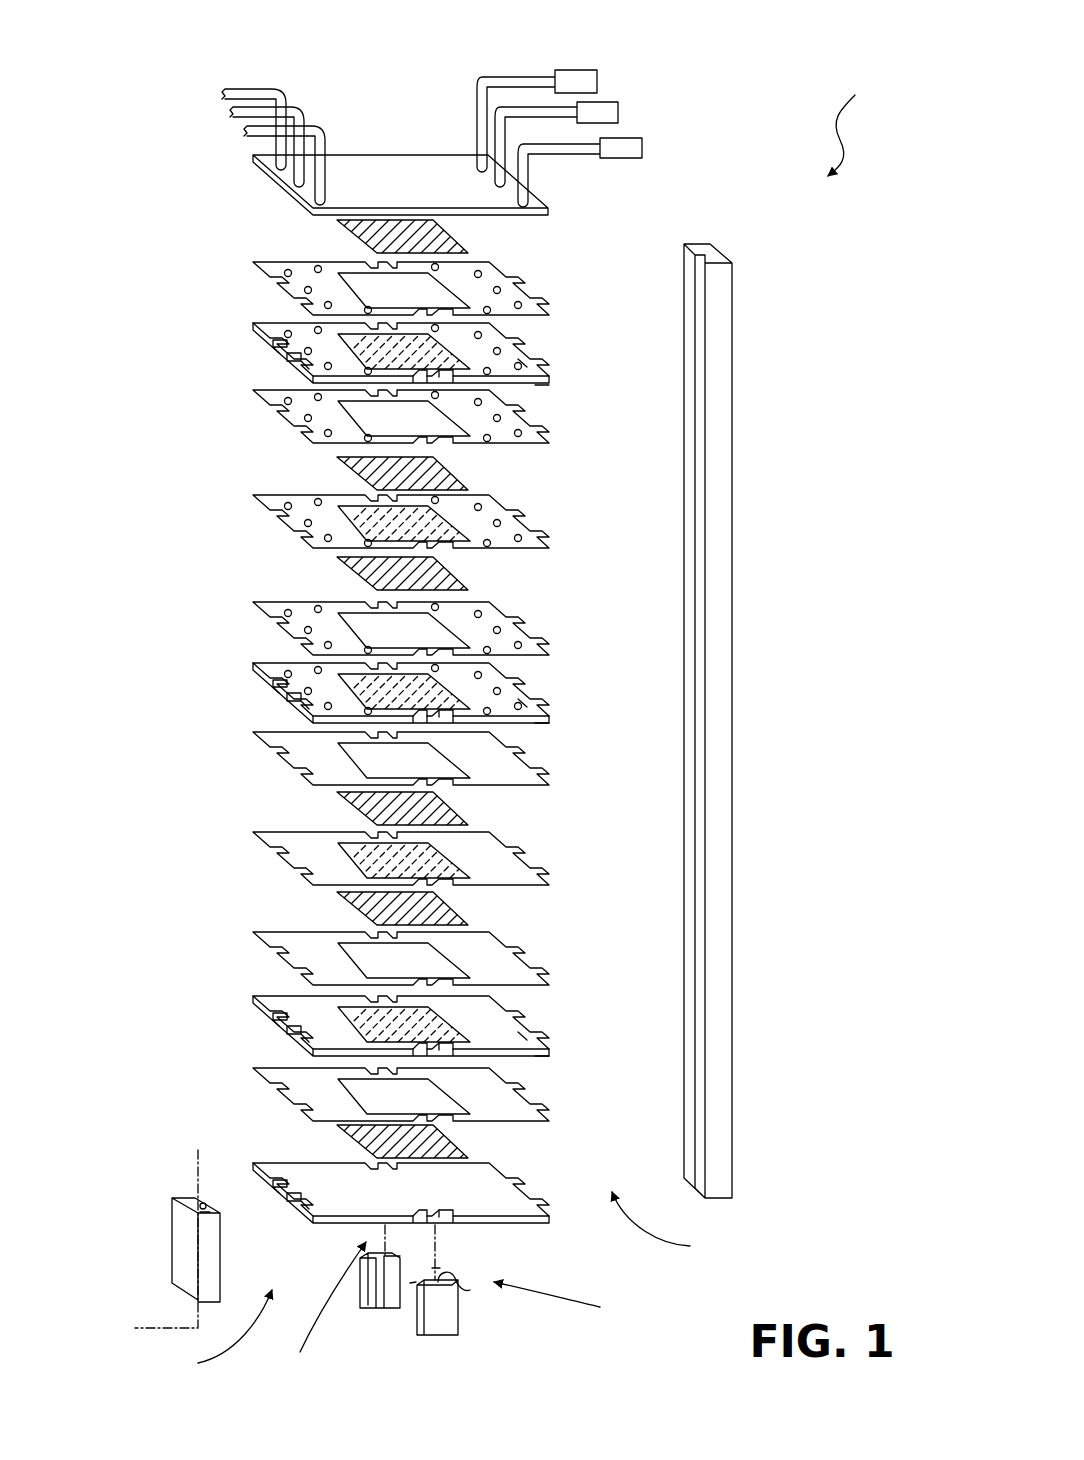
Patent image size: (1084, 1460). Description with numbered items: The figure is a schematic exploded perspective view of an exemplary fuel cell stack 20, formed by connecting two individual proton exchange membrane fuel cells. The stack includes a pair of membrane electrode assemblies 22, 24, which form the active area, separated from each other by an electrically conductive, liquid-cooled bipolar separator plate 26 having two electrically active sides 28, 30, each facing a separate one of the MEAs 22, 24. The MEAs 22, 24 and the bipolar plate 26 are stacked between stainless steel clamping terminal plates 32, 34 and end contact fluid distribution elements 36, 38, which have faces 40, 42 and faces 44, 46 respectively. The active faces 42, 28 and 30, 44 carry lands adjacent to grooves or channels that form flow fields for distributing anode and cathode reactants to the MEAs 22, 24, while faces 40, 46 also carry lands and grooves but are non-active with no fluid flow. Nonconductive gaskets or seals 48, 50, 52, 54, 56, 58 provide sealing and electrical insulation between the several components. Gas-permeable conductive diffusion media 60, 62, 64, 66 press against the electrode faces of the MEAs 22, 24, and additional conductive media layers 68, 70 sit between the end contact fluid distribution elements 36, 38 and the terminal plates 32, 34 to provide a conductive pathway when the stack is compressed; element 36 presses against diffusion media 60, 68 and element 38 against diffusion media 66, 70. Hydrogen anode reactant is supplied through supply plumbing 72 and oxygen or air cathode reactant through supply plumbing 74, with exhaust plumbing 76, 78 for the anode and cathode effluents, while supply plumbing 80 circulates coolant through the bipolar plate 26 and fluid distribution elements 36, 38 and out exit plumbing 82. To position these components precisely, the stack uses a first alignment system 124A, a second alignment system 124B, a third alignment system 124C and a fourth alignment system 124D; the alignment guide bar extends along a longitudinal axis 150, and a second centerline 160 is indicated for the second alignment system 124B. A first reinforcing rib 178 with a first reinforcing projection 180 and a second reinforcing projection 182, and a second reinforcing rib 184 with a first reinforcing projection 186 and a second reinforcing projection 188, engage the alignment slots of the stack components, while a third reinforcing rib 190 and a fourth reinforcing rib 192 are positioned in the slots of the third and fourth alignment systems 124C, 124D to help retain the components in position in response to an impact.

The fuel cell stack 20 is at (855, 123).
The membrane electrode assembly 22 is at (255, 500).
The membrane electrode assembly 24 is at (255, 836).
The bipolar separator plate 26 is at (255, 668).
The electrically active side 28 is at (527, 707).
The electrically active side 30 is at (547, 725).
The clamping terminal plate 32 is at (432, 165).
The clamping terminal plate 34 is at (303, 1213).
The end contact fluid distribution element 36 is at (255, 333).
The end contact fluid distribution element 38 is at (255, 1000).
The face 40 is at (527, 367).
The face 42 is at (549, 384).
The face 44 is at (527, 1040).
The face 46 is at (547, 1058).
The nonconductive gasket 48 is at (253, 264).
The nonconductive gasket 50 is at (255, 394).
The nonconductive gasket 52 is at (255, 606).
The nonconductive gasket 54 is at (255, 736).
The nonconductive gasket 56 is at (255, 936).
The nonconductive gasket 58 is at (255, 1071).
The gas-permeable conductive diffusion medium 60 is at (338, 460).
The gas-permeable conductive diffusion medium 62 is at (338, 560).
The gas-permeable conductive diffusion medium 64 is at (338, 795).
The gas-permeable conductive diffusion medium 66 is at (338, 895).
The conductive media layer 68 is at (342, 244).
The conductive media layer 70 is at (338, 1128).
The supply plumbing 72 is at (548, 157).
The supply plumbing 74 is at (480, 80).
The exhaust plumbing 76 is at (330, 140).
The exhaust plumbing 78 is at (262, 88).
The coolant supply plumbing 80 is at (479, 135).
The coolant exit plumbing 82 is at (297, 105).
The first alignment system 124A is at (575, 1301).
The second alignment system 124B is at (208, 1335).
The third alignment system 124C is at (315, 1311).
The fourth alignment system 124D is at (678, 1224).
The longitudinal axis 150 is at (438, 1270).
The second centerline 160 is at (170, 1327).
The first reinforcing rib 178 is at (458, 1318).
The first reinforcing projection 180 is at (416, 1282).
The second reinforcing projection 182 is at (456, 1281).
The second reinforcing rib 184 is at (172, 1243).
The first reinforcing projection 186 is at (205, 1204).
The second reinforcing projection 188 is at (209, 1214).
The third reinforcing rib 190 is at (360, 1292).
The fourth reinforcing rib 192 is at (727, 1003).